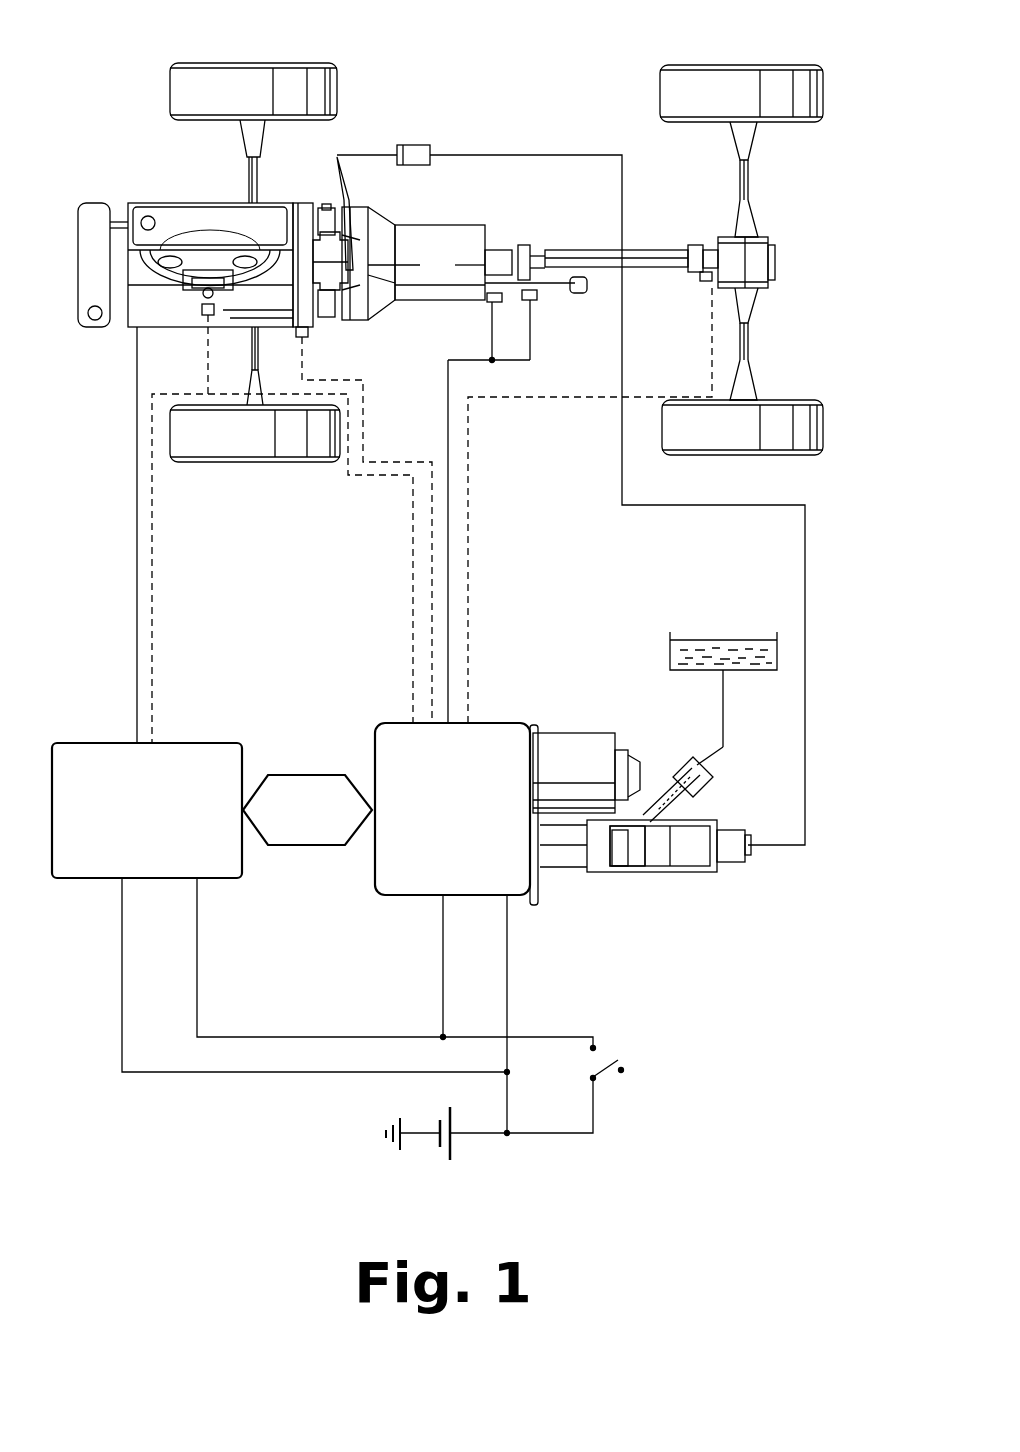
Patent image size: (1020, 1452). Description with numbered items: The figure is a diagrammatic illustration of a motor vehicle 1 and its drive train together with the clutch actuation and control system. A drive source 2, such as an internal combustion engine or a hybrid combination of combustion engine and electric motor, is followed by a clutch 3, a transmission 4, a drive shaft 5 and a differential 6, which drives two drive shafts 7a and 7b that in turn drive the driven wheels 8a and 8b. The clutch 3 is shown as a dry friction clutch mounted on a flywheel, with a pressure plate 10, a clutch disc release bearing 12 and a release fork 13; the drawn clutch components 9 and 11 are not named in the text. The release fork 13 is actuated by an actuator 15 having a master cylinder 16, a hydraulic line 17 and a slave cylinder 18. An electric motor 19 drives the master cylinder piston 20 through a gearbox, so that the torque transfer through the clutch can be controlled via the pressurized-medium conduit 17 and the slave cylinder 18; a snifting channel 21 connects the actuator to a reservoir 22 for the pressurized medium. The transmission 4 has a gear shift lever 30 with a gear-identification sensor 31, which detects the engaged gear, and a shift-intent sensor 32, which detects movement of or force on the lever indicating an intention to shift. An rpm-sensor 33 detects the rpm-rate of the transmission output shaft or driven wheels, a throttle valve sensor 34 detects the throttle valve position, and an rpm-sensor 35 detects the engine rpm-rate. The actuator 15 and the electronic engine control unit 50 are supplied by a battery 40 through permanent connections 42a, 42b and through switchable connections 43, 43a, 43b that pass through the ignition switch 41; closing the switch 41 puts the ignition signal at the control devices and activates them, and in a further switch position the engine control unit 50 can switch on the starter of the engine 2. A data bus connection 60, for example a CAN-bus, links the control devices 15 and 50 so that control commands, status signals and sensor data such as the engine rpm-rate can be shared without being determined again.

The motor vehicle 1 is at (518, 80).
The drive source 2 is at (175, 215).
The clutch 3 is at (304, 190).
The transmission 4 is at (446, 277).
The drive shaft 5 is at (655, 255).
The differential 6 is at (775, 266).
The drive shaft 7a is at (748, 185).
The drive shaft 7b is at (748, 345).
The driven wheel 8a is at (800, 95).
The driven wheel 8b is at (800, 430).
The clutch disc 9 is at (316, 308).
The pressure plate 10 is at (338, 303).
The flywheel 11 is at (326, 206).
The clutch disc release bearing 12 is at (356, 272).
The release fork 13 is at (350, 178).
The actuator 15 is at (500, 722).
The master cylinder 16 is at (682, 873).
The hydraulic line 17 is at (806, 572).
The slave cylinder 18 is at (419, 143).
The electric motor 19 is at (565, 740).
The master cylinder piston 20 is at (700, 832).
The snifting channel 21 is at (690, 762).
The reservoir 22 is at (720, 642).
The gear shift lever 30 is at (580, 295).
The gear-identification sensor 31 is at (487, 298).
The shift-intent sensor 32 is at (535, 300).
The rpm-sensor 33 is at (703, 282).
The throttle valve sensor 34 is at (205, 318).
The rpm-sensor 35 is at (295, 338).
The battery 40 is at (440, 1150).
The ignition switch 41 is at (600, 1060).
The permanent connection 42a is at (268, 1072).
The permanent connection 42b is at (508, 958).
The switchable connection 43 is at (520, 1036).
The switchable connection 43a is at (443, 955).
The switchable connection 43b is at (300, 1036).
The electronic engine control unit 50 is at (98, 718).
The data bus connection 60 is at (303, 772).